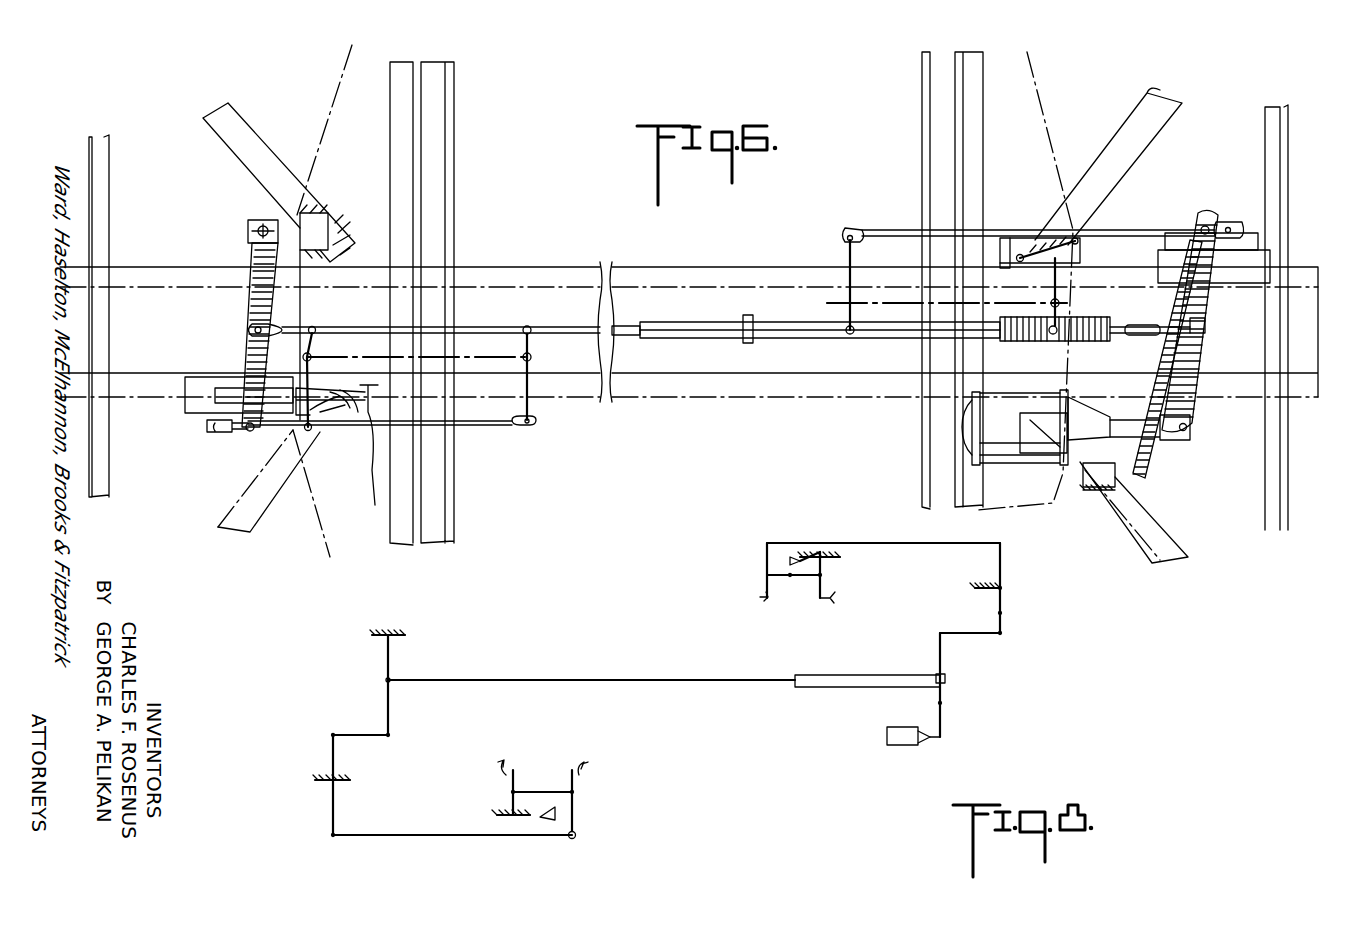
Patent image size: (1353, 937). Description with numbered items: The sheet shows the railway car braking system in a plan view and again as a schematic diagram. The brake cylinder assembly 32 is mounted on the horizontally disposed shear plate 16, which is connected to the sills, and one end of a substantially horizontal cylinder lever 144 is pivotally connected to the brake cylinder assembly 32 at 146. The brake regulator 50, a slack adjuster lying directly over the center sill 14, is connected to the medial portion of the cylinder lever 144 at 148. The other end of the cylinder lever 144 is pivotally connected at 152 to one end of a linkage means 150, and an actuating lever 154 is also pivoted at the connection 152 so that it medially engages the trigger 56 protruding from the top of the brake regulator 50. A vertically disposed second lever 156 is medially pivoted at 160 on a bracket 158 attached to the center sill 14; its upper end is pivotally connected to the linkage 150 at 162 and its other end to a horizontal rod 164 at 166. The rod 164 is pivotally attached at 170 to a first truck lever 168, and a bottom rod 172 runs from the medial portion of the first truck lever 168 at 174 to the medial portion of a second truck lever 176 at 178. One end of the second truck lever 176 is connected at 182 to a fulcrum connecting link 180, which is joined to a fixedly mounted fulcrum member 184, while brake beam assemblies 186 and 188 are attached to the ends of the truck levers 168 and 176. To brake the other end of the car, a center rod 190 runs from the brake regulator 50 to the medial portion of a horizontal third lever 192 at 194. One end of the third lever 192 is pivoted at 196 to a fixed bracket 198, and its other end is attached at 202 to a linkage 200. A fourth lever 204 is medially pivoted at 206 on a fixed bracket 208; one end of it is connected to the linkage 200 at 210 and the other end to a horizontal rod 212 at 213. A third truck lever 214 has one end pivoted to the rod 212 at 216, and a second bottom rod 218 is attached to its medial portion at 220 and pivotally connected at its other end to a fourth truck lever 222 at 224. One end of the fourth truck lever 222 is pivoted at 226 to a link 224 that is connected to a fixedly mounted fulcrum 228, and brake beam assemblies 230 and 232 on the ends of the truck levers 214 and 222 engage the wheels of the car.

In FIG. 6, the center sill 14 is at (665, 393).
In FIG. 6, the shear plate 16 is at (1040, 122).
In FIG. 6, the brake cylinder assembly 32 is at (1022, 452).
In FIG. 8, the brake cylinder assembly 32 is at (903, 747).
In FIG. 8, the brake regulator 50 is at (843, 688).
In FIG. 6, the trigger 56 is at (1145, 322).
In FIG. 6, the cylinder lever 144 is at (1200, 352).
In FIG. 8, the cylinder lever 144 is at (942, 703).
In FIG. 6, the pivotal connection 146 is at (1192, 432).
In FIG. 8, the pivotal connection 146 is at (945, 737).
In FIG. 6, the connection 148 is at (1205, 325).
In FIG. 8, the connection 148 is at (948, 676).
In FIG. 6, the linkage means 150 is at (1232, 222).
In FIG. 8, the linkage means 150 is at (965, 632).
In FIG. 6, the pivotal connection 152 is at (1198, 224).
In FIG. 8, the pivotal connection 152 is at (938, 634).
In FIG. 6, the actuating lever 154 is at (1165, 355).
In FIG. 8, the second lever 156 is at (1003, 613).
In FIG. 8, the bracket 158 is at (1005, 590).
In FIG. 8, the pivotal mounting 160 is at (990, 587).
In FIG. 8, the pivotal connection 162 is at (1003, 634).
In FIG. 6, the rod 164 is at (970, 230).
In FIG. 8, the rod 164 is at (890, 542).
In FIG. 8, the pivotal connection 166 is at (1002, 543).
In FIG. 6, the first truck lever 168 is at (845, 260).
In FIG. 8, the first truck lever 168 is at (765, 558).
In FIG. 6, the pivotal attachment 170 is at (845, 232).
In FIG. 6, the bottom rod 172 is at (925, 320).
In FIG. 8, the bottom rod 172 is at (793, 578).
In FIG. 6, the attachment 174 is at (840, 303).
In FIG. 8, the attachment 174 is at (765, 575).
In FIG. 6, the second truck lever 176 is at (1052, 282).
In FIG. 8, the second truck lever 176 is at (825, 583).
In FIG. 6, the attachment 178 is at (1060, 303).
In FIG. 8, the attachment 178 is at (828, 574).
In FIG. 6, the fulcrum connecting link 180 is at (1082, 256).
In FIG. 8, the fulcrum connecting link 180 is at (812, 556).
In FIG. 6, the connection 182 is at (1075, 240).
In FIG. 8, the connection 182 is at (823, 556).
In FIG. 6, the fulcrum member 184 is at (1000, 250).
In FIG. 8, the fulcrum member 184 is at (795, 554).
In FIG. 6, the brake beam assembly 186 is at (847, 334).
In FIG. 8, the brake beam assembly 186 is at (758, 600).
In FIG. 6, the brake beam assembly 188 is at (1050, 337).
In FIG. 8, the brake beam assembly 188 is at (838, 600).
In FIG. 6, the center rod 190 is at (566, 325).
In FIG. 8, the center rod 190 is at (606, 679).
In FIG. 6, the third lever 192 is at (252, 300).
In FIG. 8, the third lever 192 is at (390, 705).
In FIG. 6, the attachment 194 is at (252, 334).
In FIG. 8, the attachment 194 is at (390, 680).
In FIG. 6, the pivotal connection 196 is at (248, 228).
In FIG. 8, the pivotal connection 196 is at (385, 638).
In FIG. 6, the bracket 198 is at (328, 213).
In FIG. 8, the bracket 198 is at (400, 627).
In FIG. 6, the linkage 200 is at (220, 433).
In FIG. 8, the linkage 200 is at (355, 730).
In FIG. 6, the pivotal attachment 202 is at (248, 432).
In FIG. 8, the pivotal attachment 202 is at (390, 736).
In FIG. 8, the fourth lever 204 is at (330, 810).
In FIG. 8, the pivotal connection 206 is at (322, 778).
In FIG. 8, the bracket 208 is at (346, 778).
In FIG. 8, the pivotal connection 210 is at (333, 735).
In FIG. 6, the rod 212 is at (481, 428).
In FIG. 8, the rod 212 is at (440, 836).
In FIG. 8, the pivotal connection 213 is at (333, 836).
In FIG. 6, the third truck lever 214 is at (533, 383).
In FIG. 8, the third truck lever 214 is at (575, 815).
In FIG. 6, the pivotal connection 216 is at (530, 428).
In FIG. 8, the pivotal connection 216 is at (578, 838).
In FIG. 6, the second bottom rod 218 is at (467, 352).
In FIG. 8, the second bottom rod 218 is at (535, 790).
In FIG. 6, the pivotal attachment 220 is at (532, 355).
In FIG. 8, the pivotal attachment 220 is at (576, 791).
In FIG. 6, the fourth truck lever 222 is at (310, 380).
In FIG. 8, the fourth truck lever 222 is at (512, 808).
In FIG. 6, the pivotal connection / link 224 is at (312, 432).
In FIG. 8, the pivotal connection / link 224 is at (535, 820).
In FIG. 6, the pivotal connection 226 is at (330, 420).
In FIG. 8, the pivotal connection 226 is at (510, 818).
In FIG. 6, the fulcrum 228 is at (374, 482).
In FIG. 8, the fulcrum 228 is at (553, 822).
In FIG. 6, the brake beam assembly 230 is at (525, 325).
In FIG. 8, the brake beam assembly 230 is at (588, 762).
In FIG. 6, the brake beam assembly 232 is at (318, 322).
In FIG. 8, the brake beam assembly 232 is at (506, 760).